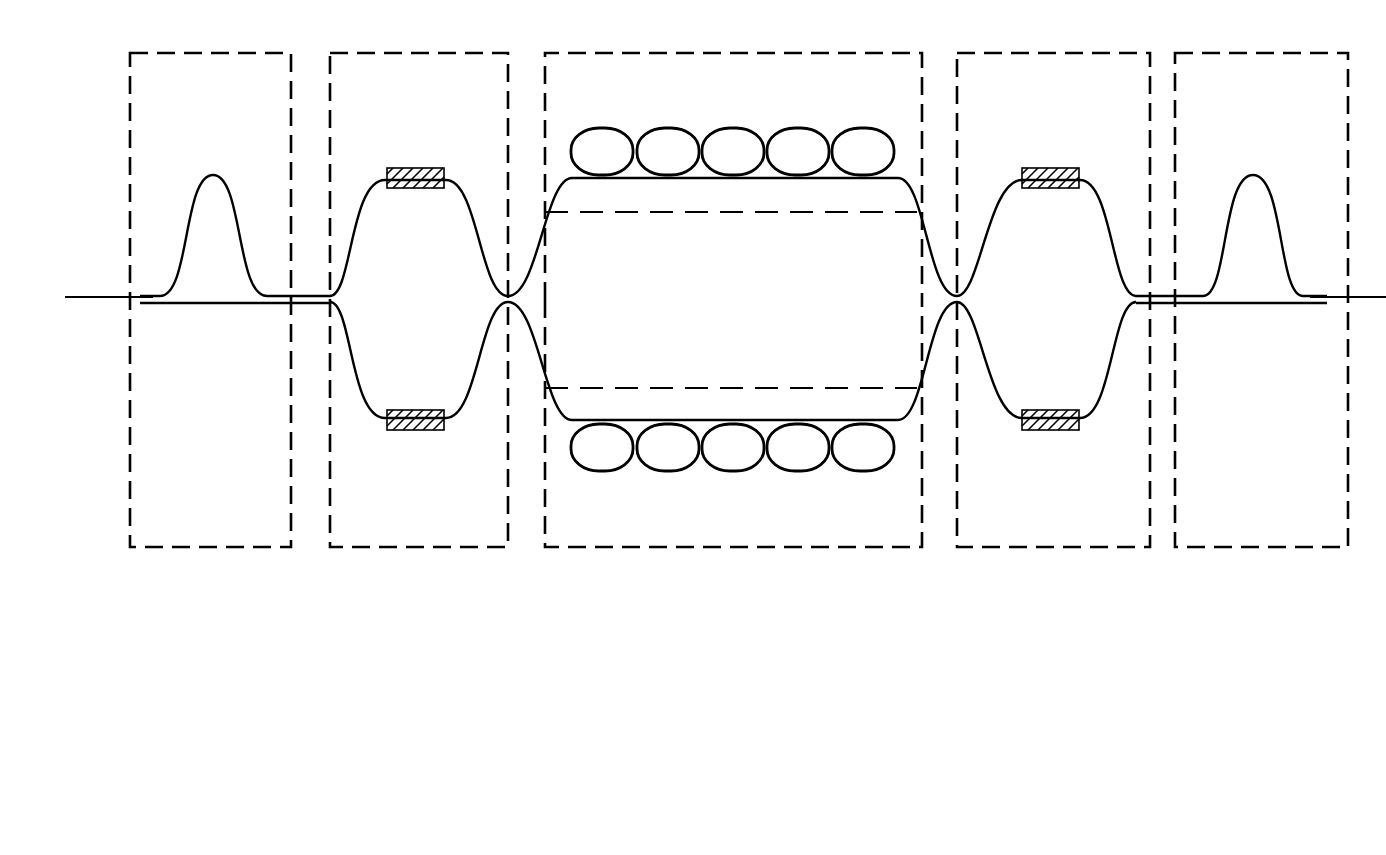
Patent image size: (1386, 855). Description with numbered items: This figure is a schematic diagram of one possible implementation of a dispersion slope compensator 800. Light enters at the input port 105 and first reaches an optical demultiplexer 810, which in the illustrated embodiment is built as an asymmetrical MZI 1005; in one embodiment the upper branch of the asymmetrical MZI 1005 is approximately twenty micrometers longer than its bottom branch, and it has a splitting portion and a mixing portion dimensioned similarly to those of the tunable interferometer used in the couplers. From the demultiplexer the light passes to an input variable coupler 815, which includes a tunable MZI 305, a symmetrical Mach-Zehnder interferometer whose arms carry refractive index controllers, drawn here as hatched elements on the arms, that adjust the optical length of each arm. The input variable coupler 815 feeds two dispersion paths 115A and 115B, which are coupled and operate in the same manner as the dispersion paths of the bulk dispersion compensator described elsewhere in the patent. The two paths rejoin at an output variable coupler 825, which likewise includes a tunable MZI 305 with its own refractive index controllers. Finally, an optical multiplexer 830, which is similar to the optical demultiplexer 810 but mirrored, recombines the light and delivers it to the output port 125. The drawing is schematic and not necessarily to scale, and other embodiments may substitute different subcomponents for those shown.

The dispersion slope compensator 800 is at (141, 647).
The optical demultiplexer 810 is at (230, 300).
The input variable coupler 815 is at (419, 300).
The output variable coupler 825 is at (1053, 300).
The optical multiplexer 830 is at (1242, 300).
The input port 105 is at (108, 298).
The output port 125 is at (1378, 298).
The asymmetrical MZI 1005 is at (238, 339).
The MZI 305 is at (375, 461).
The dispersion path 115A is at (733, 53).
The dispersion path 115B is at (733, 548).